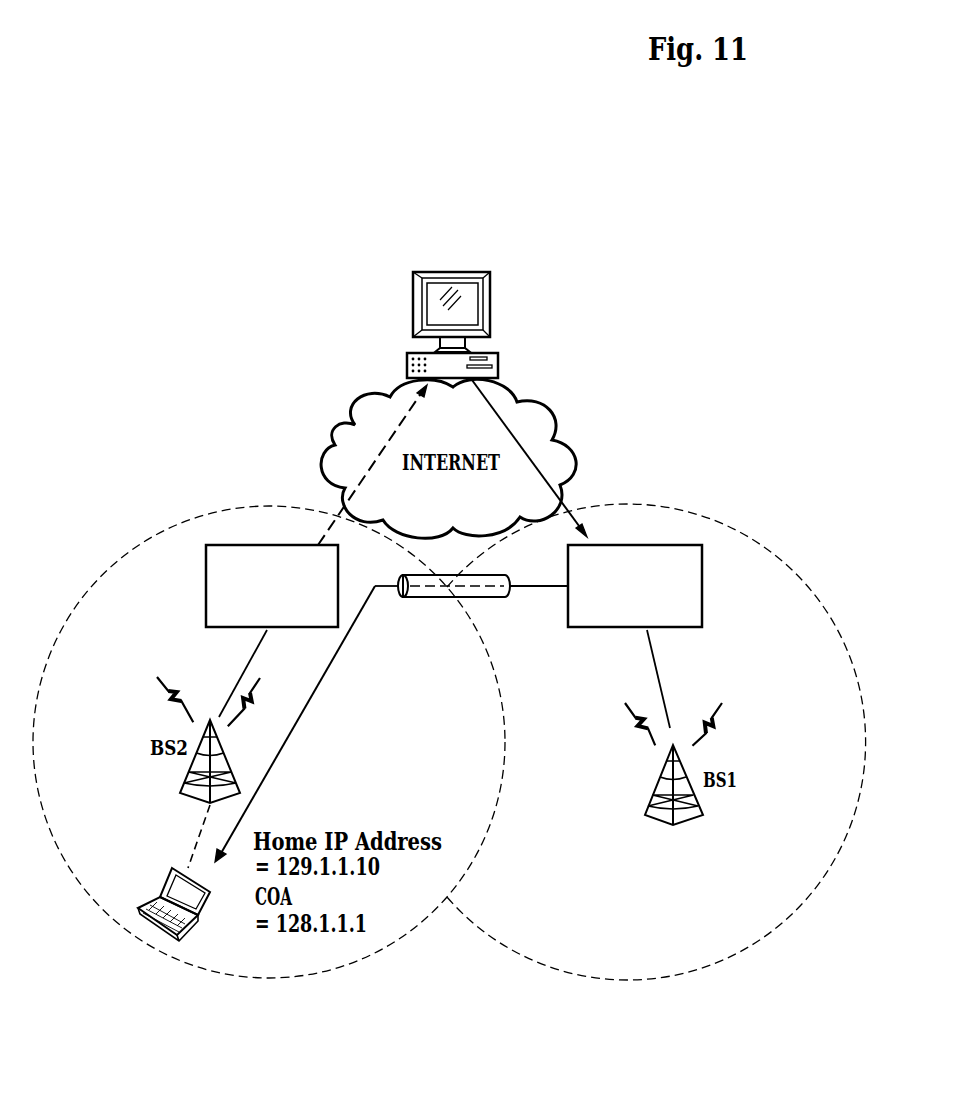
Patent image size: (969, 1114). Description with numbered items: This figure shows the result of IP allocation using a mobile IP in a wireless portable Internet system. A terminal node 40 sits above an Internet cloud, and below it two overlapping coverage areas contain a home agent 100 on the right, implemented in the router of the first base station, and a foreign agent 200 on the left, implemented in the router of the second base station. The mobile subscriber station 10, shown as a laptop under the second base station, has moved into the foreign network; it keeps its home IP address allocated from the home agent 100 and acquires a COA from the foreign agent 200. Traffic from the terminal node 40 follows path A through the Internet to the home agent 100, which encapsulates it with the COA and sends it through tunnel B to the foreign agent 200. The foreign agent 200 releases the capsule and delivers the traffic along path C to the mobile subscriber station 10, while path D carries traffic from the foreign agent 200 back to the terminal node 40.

The mobile subscriber station 10 is at (165, 885).
The terminal node 40 is at (490, 302).
The home agent 100 is at (702, 583).
The foreign agent 200 is at (206, 583).
The packet path from correspondent node to home agent A is at (520, 442).
The tunnel between home agent and foreign agent B is at (420, 592).
The packet path from foreign agent to mobile node C is at (299, 720).
The packet path from foreign agent to correspondent node D is at (383, 442).